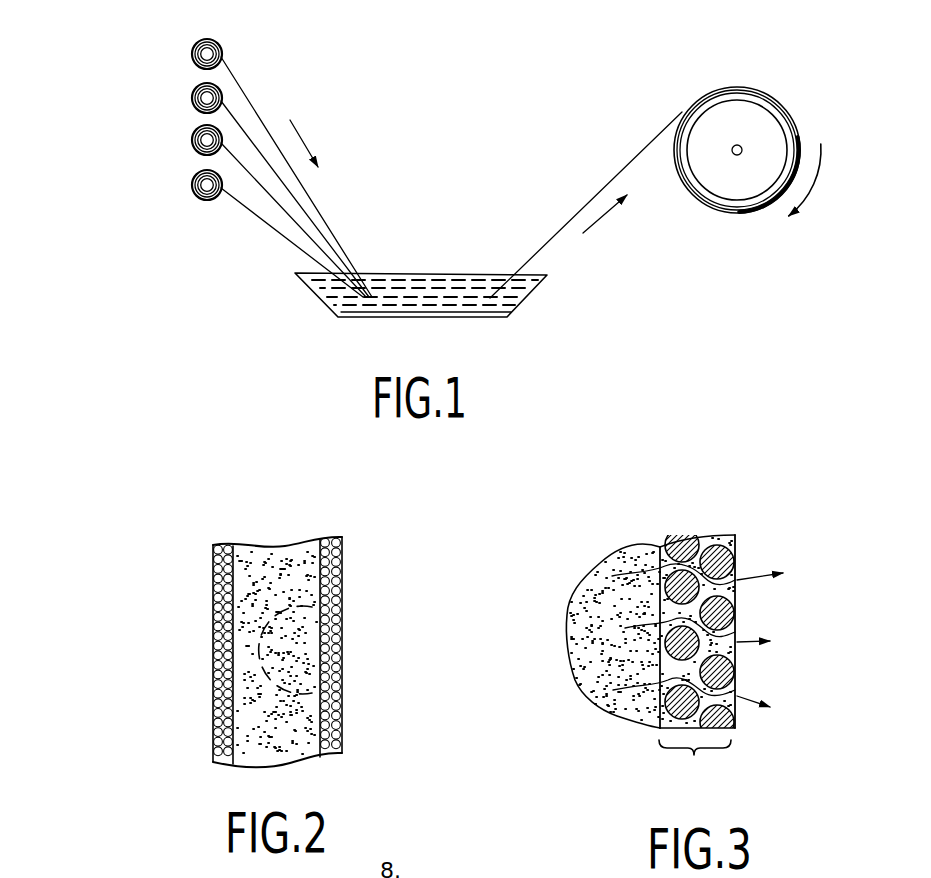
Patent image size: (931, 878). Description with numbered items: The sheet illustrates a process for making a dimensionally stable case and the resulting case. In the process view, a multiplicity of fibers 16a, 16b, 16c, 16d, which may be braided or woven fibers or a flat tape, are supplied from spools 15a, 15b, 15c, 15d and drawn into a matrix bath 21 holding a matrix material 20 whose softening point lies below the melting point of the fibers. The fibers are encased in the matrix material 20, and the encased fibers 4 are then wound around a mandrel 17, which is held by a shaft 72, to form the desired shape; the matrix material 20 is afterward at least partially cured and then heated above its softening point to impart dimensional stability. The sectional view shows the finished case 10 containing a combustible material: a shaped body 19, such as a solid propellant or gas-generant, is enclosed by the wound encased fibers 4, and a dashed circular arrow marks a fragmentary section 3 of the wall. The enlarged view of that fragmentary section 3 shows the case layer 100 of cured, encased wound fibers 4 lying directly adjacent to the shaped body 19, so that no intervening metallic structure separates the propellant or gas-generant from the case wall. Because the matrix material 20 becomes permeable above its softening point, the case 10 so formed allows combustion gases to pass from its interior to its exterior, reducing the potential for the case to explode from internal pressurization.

In FIG. 1, the spool 15a is at (192, 54).
In FIG. 1, the spool 15b is at (192, 98).
In FIG. 1, the spool 15c is at (192, 140).
In FIG. 1, the spool 15d is at (192, 185).
In FIG. 1, the fiber 16a is at (246, 93).
In FIG. 1, the fiber 16b is at (304, 208).
In FIG. 1, the fiber 16c is at (269, 190).
In FIG. 1, the fiber 16d is at (299, 246).
In FIG. 1, the matrix material 20 is at (410, 274).
In FIG. 3, the matrix material 20 is at (737, 631).
In FIG. 1, the matrix bath 21 is at (523, 303).
In FIG. 1, the encased fiber 4 is at (603, 188).
In FIG. 3, the encased fiber 4 is at (717, 678).
In FIG. 1, the mandrel 17 is at (745, 183).
In FIG. 1, the shaft 72 is at (738, 145).
In FIG. 2, the case 10 is at (209, 622).
In FIG. 3, the case 10 is at (746, 526).
In FIG. 2, the fragmentary section 3 is at (343, 608).
In FIG. 2, the shaped body 19 is at (310, 708).
In FIG. 3, the layer of cured encased wound fibers 100 is at (695, 762).